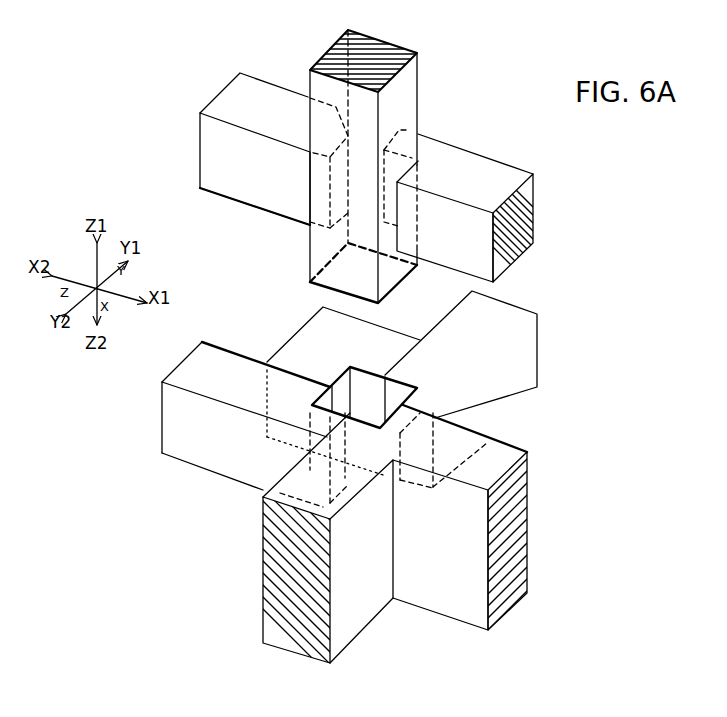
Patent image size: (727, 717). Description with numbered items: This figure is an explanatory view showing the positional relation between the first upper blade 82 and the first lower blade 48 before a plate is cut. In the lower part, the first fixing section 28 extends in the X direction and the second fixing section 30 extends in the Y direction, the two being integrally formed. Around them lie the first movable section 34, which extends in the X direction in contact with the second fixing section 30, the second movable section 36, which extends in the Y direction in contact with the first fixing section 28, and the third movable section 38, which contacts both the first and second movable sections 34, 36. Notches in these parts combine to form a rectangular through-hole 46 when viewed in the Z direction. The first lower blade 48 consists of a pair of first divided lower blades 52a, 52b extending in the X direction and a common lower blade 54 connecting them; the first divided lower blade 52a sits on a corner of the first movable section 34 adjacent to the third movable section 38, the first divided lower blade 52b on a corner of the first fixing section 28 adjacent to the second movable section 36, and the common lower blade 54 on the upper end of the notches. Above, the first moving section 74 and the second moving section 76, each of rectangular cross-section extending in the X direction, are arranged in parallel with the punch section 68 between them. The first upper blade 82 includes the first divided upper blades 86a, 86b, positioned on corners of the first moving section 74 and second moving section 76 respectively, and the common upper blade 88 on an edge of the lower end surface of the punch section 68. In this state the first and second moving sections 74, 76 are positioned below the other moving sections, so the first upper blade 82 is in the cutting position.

The first fixing section 28 is at (469, 607).
The second fixing section 30 is at (372, 620).
The first movable section 34 is at (182, 422).
The second movable section 36 is at (503, 313).
The third movable section 38 is at (300, 357).
The rectangular through-hole 46 is at (373, 403).
The first lower blade 48 is at (518, 421).
The first divided lower blade 52a is at (216, 344).
The first divided lower blade 52b is at (513, 440).
The common lower blade 54 is at (412, 397).
The punch section 68 is at (402, 91).
The first moving section 74 is at (268, 97).
The second moving section 76 is at (487, 167).
The first upper blade 82 is at (214, 198).
The first divided upper blade 86a is at (262, 209).
The first divided upper blade 86b is at (458, 276).
The common upper blade 88 is at (400, 284).